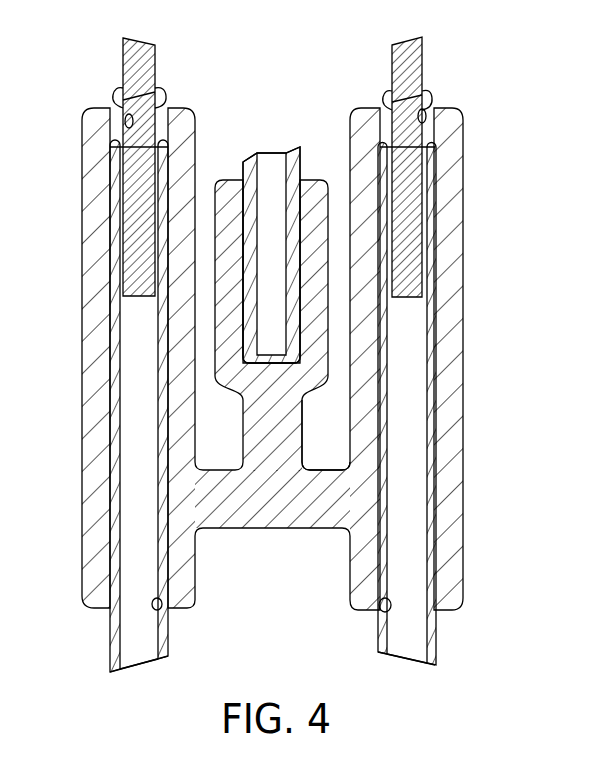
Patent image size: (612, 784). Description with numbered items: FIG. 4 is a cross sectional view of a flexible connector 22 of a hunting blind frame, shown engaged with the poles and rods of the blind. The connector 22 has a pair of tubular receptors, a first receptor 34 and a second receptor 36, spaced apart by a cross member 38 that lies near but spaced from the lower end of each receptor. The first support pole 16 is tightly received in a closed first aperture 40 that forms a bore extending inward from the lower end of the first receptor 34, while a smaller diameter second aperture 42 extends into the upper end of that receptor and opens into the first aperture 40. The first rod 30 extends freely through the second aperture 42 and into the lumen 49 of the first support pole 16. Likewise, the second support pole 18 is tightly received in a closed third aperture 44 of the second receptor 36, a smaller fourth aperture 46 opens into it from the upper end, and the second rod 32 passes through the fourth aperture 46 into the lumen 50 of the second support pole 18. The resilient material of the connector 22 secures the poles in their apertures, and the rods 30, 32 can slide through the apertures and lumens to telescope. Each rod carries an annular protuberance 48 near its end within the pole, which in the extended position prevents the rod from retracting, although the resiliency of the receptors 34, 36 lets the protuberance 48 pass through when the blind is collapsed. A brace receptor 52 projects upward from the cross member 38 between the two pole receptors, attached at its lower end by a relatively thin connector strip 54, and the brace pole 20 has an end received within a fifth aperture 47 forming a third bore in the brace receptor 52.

The first support pole 16 is at (430, 643).
The second support pole 18 is at (120, 645).
The brace pole 20 is at (297, 150).
The connector 22 is at (82, 240).
The first rod 30 is at (402, 73).
The second rod 32 is at (147, 73).
The first receptor 34 is at (457, 333).
The second receptor 36 is at (92, 370).
The cross member 38 is at (263, 513).
The first aperture 40 is at (383, 614).
The second aperture 42 is at (427, 106).
The third aperture 44 is at (157, 610).
The fourth aperture 46 is at (127, 117).
The fifth aperture 47 is at (248, 190).
The annular protuberance 48 is at (160, 100).
The lumen 49 is at (386, 632).
The lumen 50 is at (160, 637).
The brace receptor 52 is at (308, 192).
The connector strip 54 is at (283, 447).